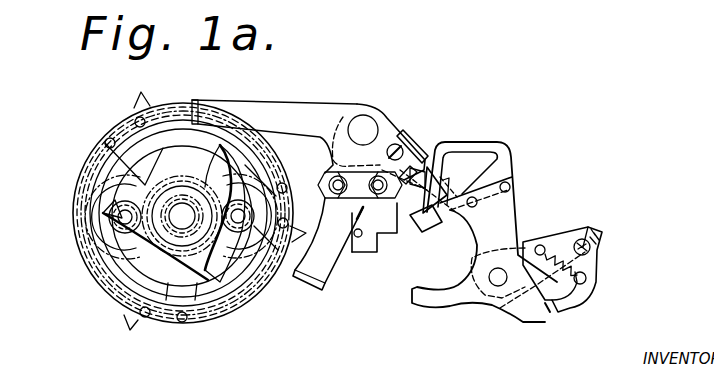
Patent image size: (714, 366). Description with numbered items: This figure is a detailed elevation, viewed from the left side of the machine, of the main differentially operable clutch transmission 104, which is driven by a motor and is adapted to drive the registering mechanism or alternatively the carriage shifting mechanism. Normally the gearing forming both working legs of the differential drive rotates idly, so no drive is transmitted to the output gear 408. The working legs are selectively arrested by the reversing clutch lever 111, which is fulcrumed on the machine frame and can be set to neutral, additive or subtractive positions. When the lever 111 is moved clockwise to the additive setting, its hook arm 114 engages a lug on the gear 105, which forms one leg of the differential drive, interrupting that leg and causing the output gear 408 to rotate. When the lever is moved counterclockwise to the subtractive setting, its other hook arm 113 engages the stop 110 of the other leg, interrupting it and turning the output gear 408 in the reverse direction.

The main differentially operable clutch transmission 104 is at (260, 298).
The gear 105 is at (124, 300).
The stop 110 is at (207, 305).
The reversing clutch lever 111 is at (327, 104).
The hook arm 113 is at (246, 108).
The hook arm 114 is at (318, 279).
The output gear 408 is at (87, 157).